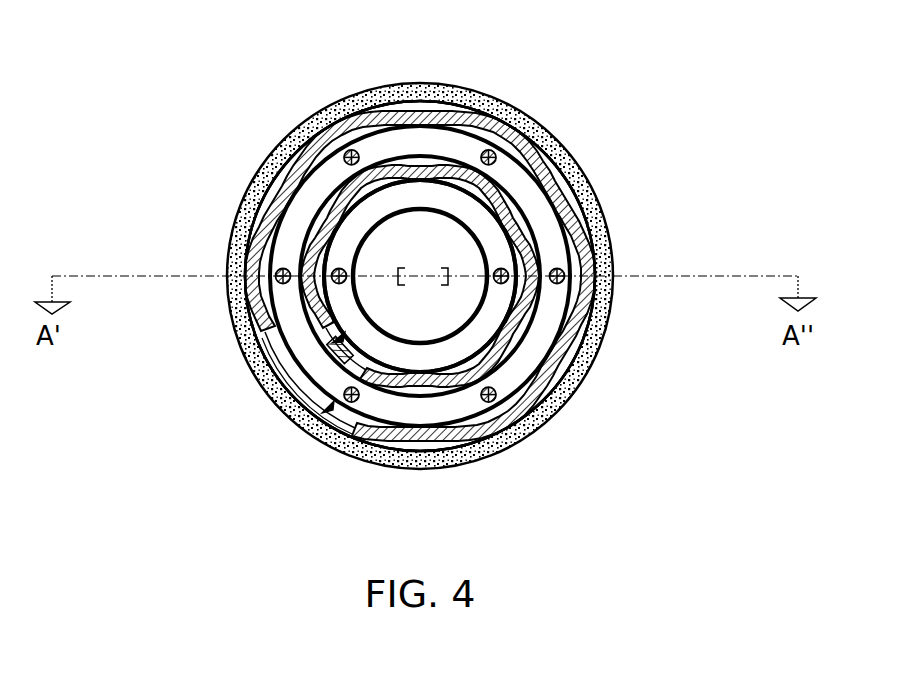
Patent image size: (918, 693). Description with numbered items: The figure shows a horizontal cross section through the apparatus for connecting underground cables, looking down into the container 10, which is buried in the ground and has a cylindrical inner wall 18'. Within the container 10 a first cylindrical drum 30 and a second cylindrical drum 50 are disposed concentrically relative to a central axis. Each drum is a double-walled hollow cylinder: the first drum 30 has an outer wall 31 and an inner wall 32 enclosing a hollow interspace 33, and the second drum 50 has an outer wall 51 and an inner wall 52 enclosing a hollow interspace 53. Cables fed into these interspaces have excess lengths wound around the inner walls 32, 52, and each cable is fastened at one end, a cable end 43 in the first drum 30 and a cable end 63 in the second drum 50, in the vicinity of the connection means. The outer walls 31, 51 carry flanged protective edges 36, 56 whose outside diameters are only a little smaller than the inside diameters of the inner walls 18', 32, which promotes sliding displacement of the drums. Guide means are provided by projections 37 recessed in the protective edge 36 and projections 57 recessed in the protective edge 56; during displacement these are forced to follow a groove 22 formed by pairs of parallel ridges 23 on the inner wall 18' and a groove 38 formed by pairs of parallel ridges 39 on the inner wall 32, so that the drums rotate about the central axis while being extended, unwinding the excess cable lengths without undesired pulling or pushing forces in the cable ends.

The container 10 is at (582, 162).
The groove 22 is at (227, 265).
The parallel ridges 23 is at (389, 465).
The hollow interspace 53 is at (553, 383).
The flanged protective edge 36 is at (302, 123).
The flanged protective edge 56 is at (262, 160).
The projections 37 is at (428, 165).
The hollow interspace 33 is at (540, 218).
The inner wall 32 is at (280, 145).
The groove 38 is at (235, 213).
The projections 57 is at (423, 368).
The parallel ridges 39 is at (247, 183).
The inner wall 52 is at (465, 228).
The cable end 63 is at (423, 277).
The second cylindrical drum 50 is at (278, 407).
The outer wall 51 is at (297, 417).
The cable end 43 is at (340, 445).
The first cylindrical drum 30 is at (315, 432).
The outer wall 31 is at (263, 388).
The cylindrical inner wall 18' is at (250, 377).